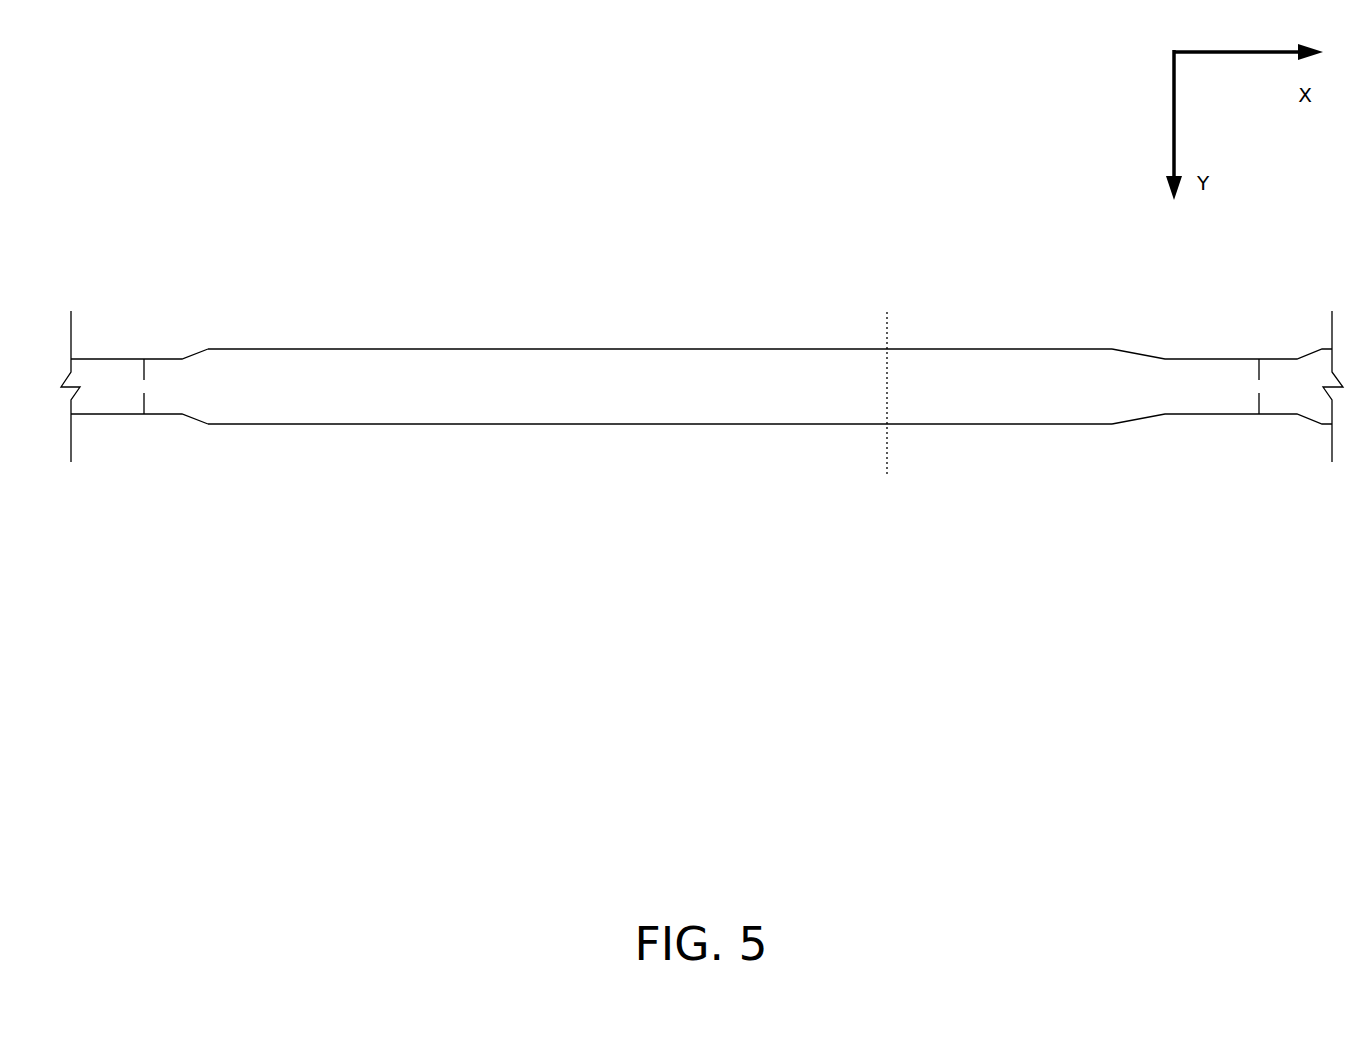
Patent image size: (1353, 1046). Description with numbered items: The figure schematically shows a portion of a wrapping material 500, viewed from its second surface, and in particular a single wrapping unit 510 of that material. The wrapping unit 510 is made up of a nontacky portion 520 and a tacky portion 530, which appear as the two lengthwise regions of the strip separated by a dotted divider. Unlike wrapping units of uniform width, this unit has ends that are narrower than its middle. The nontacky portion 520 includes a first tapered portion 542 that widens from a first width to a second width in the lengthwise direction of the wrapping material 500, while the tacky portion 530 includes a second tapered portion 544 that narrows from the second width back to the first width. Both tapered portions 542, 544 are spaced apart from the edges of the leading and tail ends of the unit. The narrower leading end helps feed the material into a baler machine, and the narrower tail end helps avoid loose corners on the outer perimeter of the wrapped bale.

The wrapping material 500 is at (720, 784).
The wrapping unit 510 is at (680, 322).
The nontacky portion 520 is at (999, 396).
The tacky portion 530 is at (609, 387).
The first tapered portion 542 is at (1138, 345).
The second tapered portion 544 is at (189, 347).